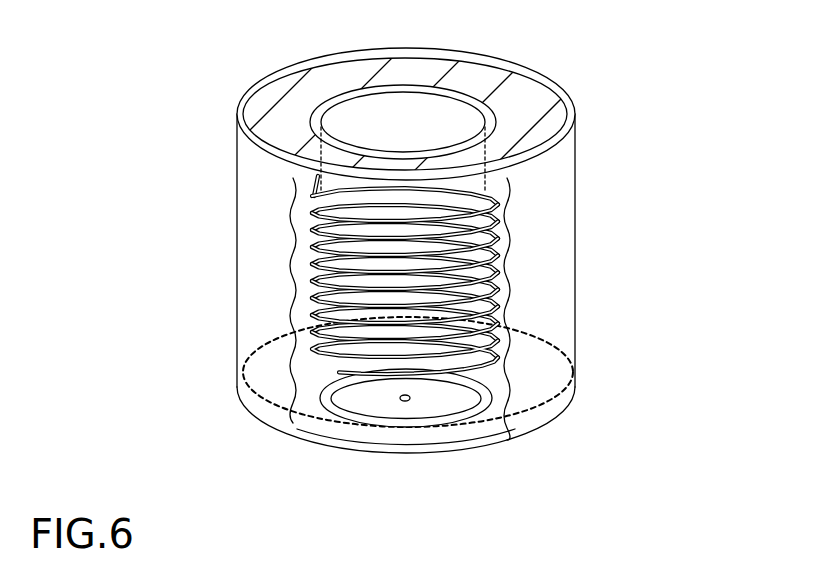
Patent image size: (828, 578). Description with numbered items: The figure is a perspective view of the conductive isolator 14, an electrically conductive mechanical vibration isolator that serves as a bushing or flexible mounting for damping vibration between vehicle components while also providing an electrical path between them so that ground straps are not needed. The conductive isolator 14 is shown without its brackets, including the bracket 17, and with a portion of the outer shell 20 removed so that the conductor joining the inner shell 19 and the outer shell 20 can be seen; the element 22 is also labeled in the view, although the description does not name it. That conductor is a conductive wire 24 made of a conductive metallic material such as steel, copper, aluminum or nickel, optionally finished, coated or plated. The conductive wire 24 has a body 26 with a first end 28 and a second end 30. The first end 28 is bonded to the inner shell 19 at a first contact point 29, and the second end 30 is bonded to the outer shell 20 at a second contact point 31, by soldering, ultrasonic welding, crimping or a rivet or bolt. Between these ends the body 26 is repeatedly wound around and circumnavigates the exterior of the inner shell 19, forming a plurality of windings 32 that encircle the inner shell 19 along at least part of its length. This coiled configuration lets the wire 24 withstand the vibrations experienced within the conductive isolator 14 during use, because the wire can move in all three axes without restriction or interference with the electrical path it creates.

The conductive isolator 14 is at (108, 208).
The bracket 17 is at (237, 362).
The inner shell 19 is at (317, 120).
The outer shell 20 is at (570, 113).
The hatched seat surface 22 is at (250, 120).
The conductive wire 24 is at (492, 215).
The body 26 is at (493, 268).
The first end 28 is at (320, 192).
The first contact point 29 is at (317, 181).
The second end 30 is at (520, 383).
The second contact point 31 is at (542, 382).
The windings 32 is at (500, 327).